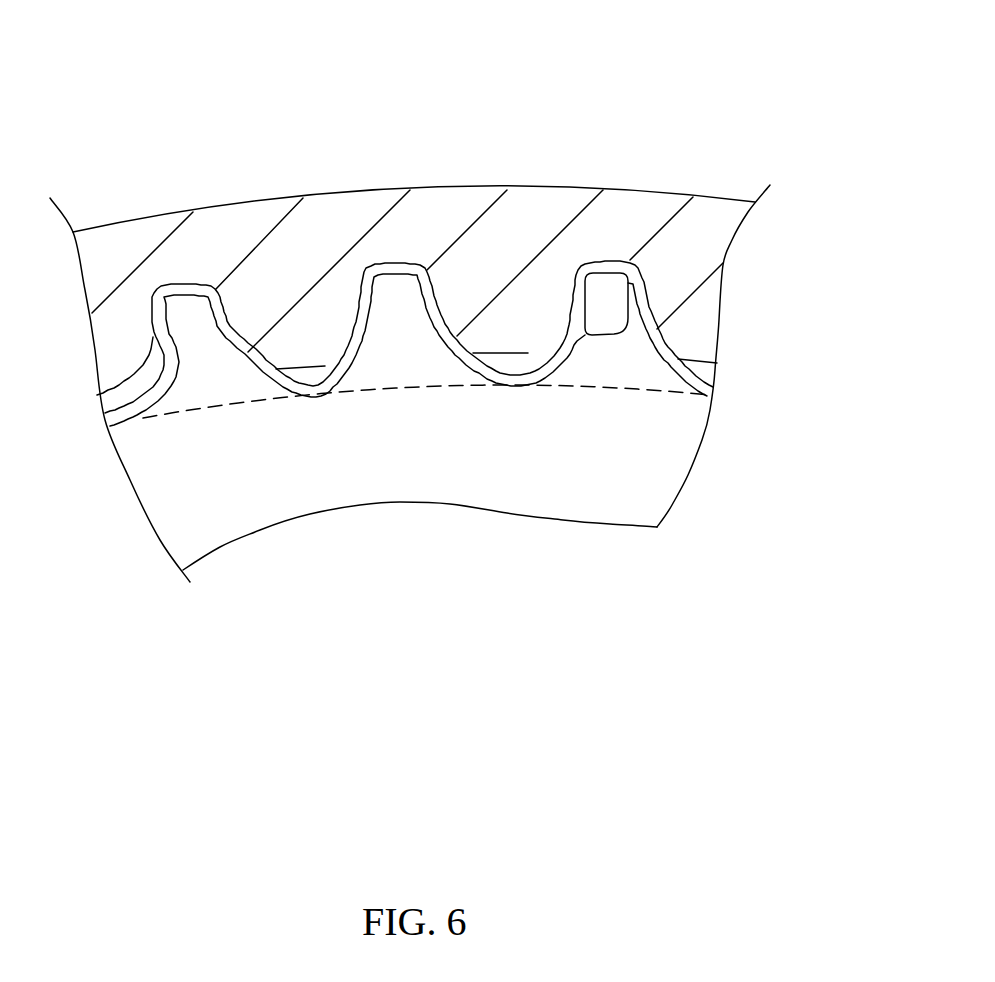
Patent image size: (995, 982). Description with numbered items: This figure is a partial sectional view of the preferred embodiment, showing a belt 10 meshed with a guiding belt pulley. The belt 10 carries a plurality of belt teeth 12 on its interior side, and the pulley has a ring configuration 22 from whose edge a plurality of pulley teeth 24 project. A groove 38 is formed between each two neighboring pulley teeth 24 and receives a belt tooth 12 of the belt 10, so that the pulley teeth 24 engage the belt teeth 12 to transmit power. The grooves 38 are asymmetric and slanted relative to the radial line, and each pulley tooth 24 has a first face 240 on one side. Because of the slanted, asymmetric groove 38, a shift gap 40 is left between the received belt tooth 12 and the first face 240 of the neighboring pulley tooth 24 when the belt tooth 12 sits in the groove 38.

The belt 10 is at (327, 203).
The belt teeth 12 is at (503, 307).
The ring configuration 22 is at (147, 478).
The pulley teeth 24 is at (412, 340).
The groove 38 is at (512, 387).
The shift gap 40 is at (353, 335).
The first face 240 is at (628, 280).